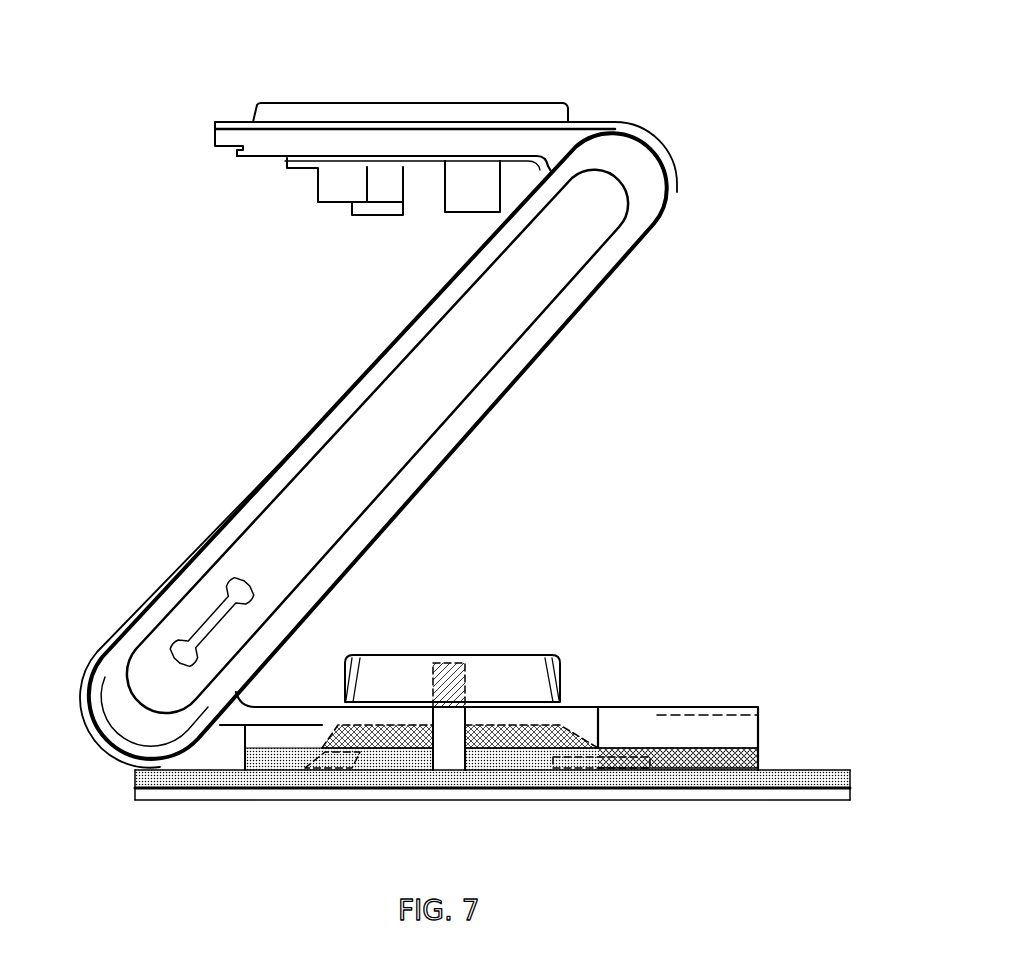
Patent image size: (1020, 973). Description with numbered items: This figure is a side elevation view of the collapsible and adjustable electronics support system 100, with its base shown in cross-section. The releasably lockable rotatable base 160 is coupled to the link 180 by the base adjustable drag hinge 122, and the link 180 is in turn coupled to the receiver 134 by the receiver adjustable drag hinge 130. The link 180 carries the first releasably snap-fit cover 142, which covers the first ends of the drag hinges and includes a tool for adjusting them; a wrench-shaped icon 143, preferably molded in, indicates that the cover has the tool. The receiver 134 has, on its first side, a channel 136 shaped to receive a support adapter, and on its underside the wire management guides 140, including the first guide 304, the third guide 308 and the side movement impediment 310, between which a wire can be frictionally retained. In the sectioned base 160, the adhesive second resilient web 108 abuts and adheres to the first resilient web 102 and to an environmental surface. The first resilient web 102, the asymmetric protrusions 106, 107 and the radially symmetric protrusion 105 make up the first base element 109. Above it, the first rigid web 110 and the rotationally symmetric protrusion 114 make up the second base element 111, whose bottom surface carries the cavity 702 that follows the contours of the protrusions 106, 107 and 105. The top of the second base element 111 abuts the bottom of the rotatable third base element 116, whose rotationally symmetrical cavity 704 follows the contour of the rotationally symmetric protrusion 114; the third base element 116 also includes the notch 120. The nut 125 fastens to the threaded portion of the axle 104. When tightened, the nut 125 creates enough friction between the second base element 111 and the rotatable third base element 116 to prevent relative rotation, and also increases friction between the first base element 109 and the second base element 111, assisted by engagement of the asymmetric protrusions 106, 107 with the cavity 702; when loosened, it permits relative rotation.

The collapsible and adjustable electronics support system 100 is at (242, 50).
The first resilient web 102 is at (805, 772).
The axle 104 is at (450, 733).
The radially symmetric protrusion 105 is at (513, 765).
The asymmetric protrusion 106 is at (618, 770).
The asymmetric protrusion 107 is at (325, 768).
The adhesive second resilient web 108 is at (243, 800).
The first base element 109 is at (134, 773).
The first rigid web 110 is at (758, 755).
The second base element 111 is at (770, 750).
The rotationally symmetric protrusion 114 is at (350, 735).
The rotatable third base element 116 is at (645, 707).
The notch 120 is at (702, 712).
The base adjustable drag hinge 122 is at (104, 602).
The nut 125 is at (405, 677).
The receiver adjustable drag hinge 130 is at (668, 227).
The receiver 134 is at (215, 140).
The channel 136 is at (345, 102).
The wire management guides 140 is at (340, 285).
The first releasably snap-fit cover 142 is at (452, 355).
The icon 143 is at (243, 595).
The releasably lockable rotatable base 160 is at (529, 578).
The link 180 is at (572, 367).
The first guide 304 is at (470, 200).
The third guide 308 is at (378, 205).
The side movement impediment 310 is at (340, 183).
The cavity 702 is at (594, 756).
The rotationally symmetrical cavity 704 is at (565, 727).